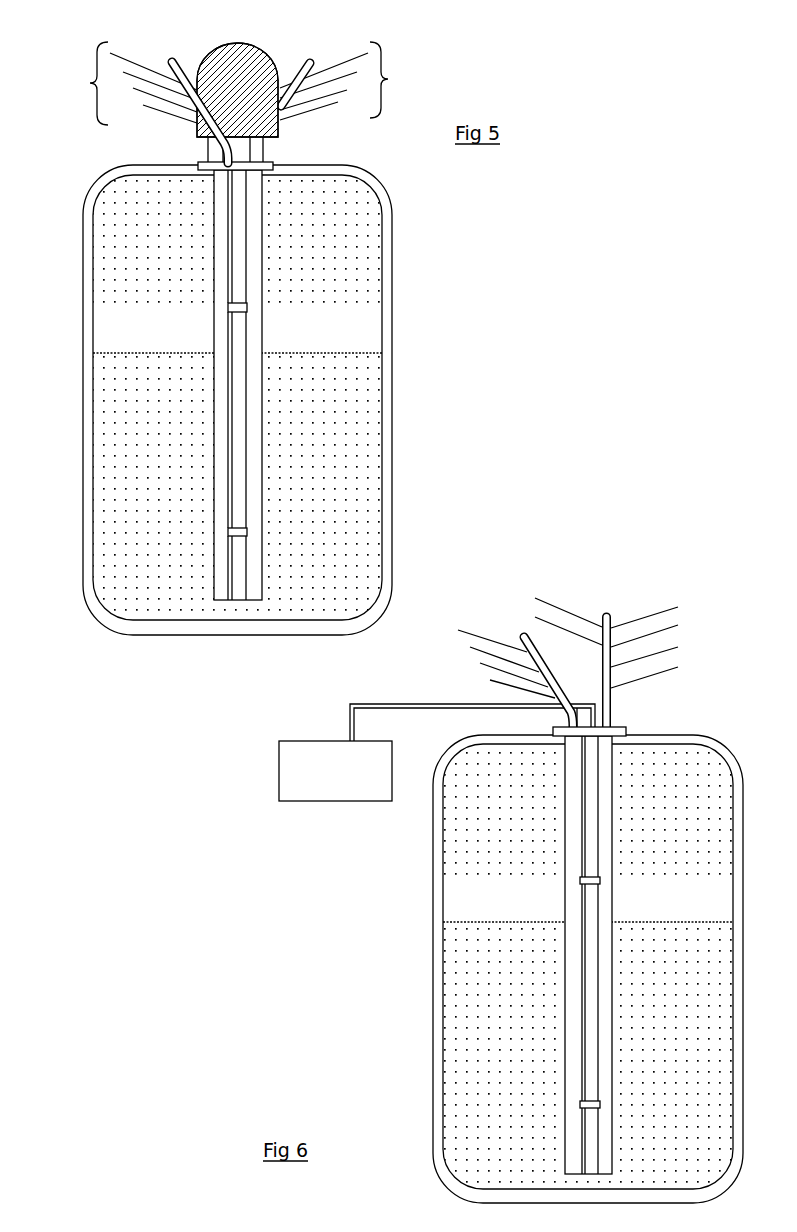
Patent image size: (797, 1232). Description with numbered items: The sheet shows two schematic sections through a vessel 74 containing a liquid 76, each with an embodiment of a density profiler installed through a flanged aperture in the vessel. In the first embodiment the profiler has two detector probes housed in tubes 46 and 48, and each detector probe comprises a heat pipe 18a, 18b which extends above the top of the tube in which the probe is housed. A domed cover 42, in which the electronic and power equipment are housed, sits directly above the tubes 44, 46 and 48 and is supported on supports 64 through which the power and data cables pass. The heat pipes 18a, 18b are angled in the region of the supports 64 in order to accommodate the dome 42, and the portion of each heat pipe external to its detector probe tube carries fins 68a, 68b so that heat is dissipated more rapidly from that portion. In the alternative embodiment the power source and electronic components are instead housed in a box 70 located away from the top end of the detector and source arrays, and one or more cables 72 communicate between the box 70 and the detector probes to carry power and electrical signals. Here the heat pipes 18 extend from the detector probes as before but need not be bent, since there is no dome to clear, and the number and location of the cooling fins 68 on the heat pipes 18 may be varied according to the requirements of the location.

In FIG. 5, the heat pipe 18a is at (178, 52).
In FIG. 5, the heat pipe 18b is at (302, 60).
In FIG. 5, the domed cover 42 is at (228, 55).
In FIG. 5, the supports 64 is at (260, 147).
In FIG. 5, the fins 68a is at (107, 83).
In FIG. 5, the fins 68b is at (359, 81).
In FIG. 5, the tube 48 is at (223, 227).
In FIG. 5, the tube 46 is at (252, 260).
In FIG. 5, the tube 44 is at (238, 333).
In FIG. 5, the vessel 74 is at (387, 300).
In FIG. 5, the liquid 76 is at (348, 457).
In FIG. 6, the cooling fins 68 is at (490, 680).
In FIG. 6, the heat pipes 18 is at (610, 708).
In FIG. 6, the box 70 is at (335, 771).
In FIG. 6, the cables 72 is at (352, 705).